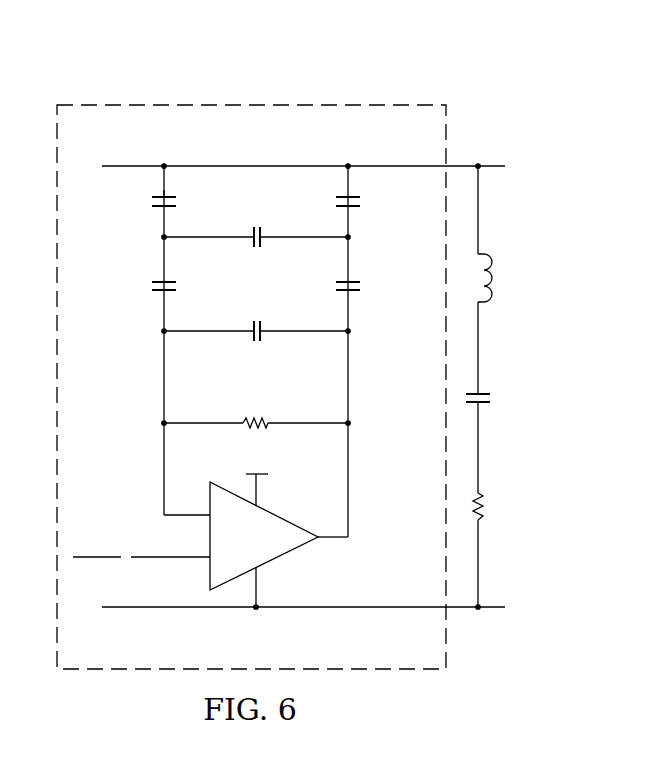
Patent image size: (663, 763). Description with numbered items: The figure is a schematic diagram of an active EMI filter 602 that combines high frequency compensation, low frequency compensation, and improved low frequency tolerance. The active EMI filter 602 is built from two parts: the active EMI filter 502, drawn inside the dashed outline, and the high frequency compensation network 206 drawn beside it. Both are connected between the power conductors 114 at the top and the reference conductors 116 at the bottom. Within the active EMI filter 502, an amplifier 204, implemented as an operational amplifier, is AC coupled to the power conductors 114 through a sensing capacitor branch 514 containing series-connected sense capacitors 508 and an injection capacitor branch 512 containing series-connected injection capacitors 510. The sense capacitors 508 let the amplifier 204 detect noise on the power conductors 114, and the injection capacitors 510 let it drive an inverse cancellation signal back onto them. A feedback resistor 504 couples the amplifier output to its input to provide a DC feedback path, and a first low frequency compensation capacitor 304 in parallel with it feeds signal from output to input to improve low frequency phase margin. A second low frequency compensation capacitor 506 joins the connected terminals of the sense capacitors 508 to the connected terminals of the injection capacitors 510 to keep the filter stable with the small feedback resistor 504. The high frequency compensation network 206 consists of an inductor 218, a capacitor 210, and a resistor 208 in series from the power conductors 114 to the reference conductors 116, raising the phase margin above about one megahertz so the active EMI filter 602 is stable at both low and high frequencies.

The active EMI filter 502 is at (188, 100).
The active EMI filter 602 is at (360, 70).
The power conductors 114 is at (302, 165).
The reference conductors 116 is at (226, 611).
The sense capacitors 508 is at (152, 200).
The injection capacitors 510 is at (360, 200).
The second low frequency compensation capacitor 506 is at (254, 226).
The first low frequency compensation capacitor 304 is at (254, 320).
The feedback resistor 504 is at (255, 416).
The sensing capacitor branch 514 is at (141, 340).
The injection capacitor branch 512 is at (376, 351).
The amplifier 204 is at (207, 578).
The high frequency compensation network 206 is at (547, 386).
The inductor 218 is at (493, 278).
The capacitor 210 is at (492, 397).
The resistor 208 is at (488, 510).